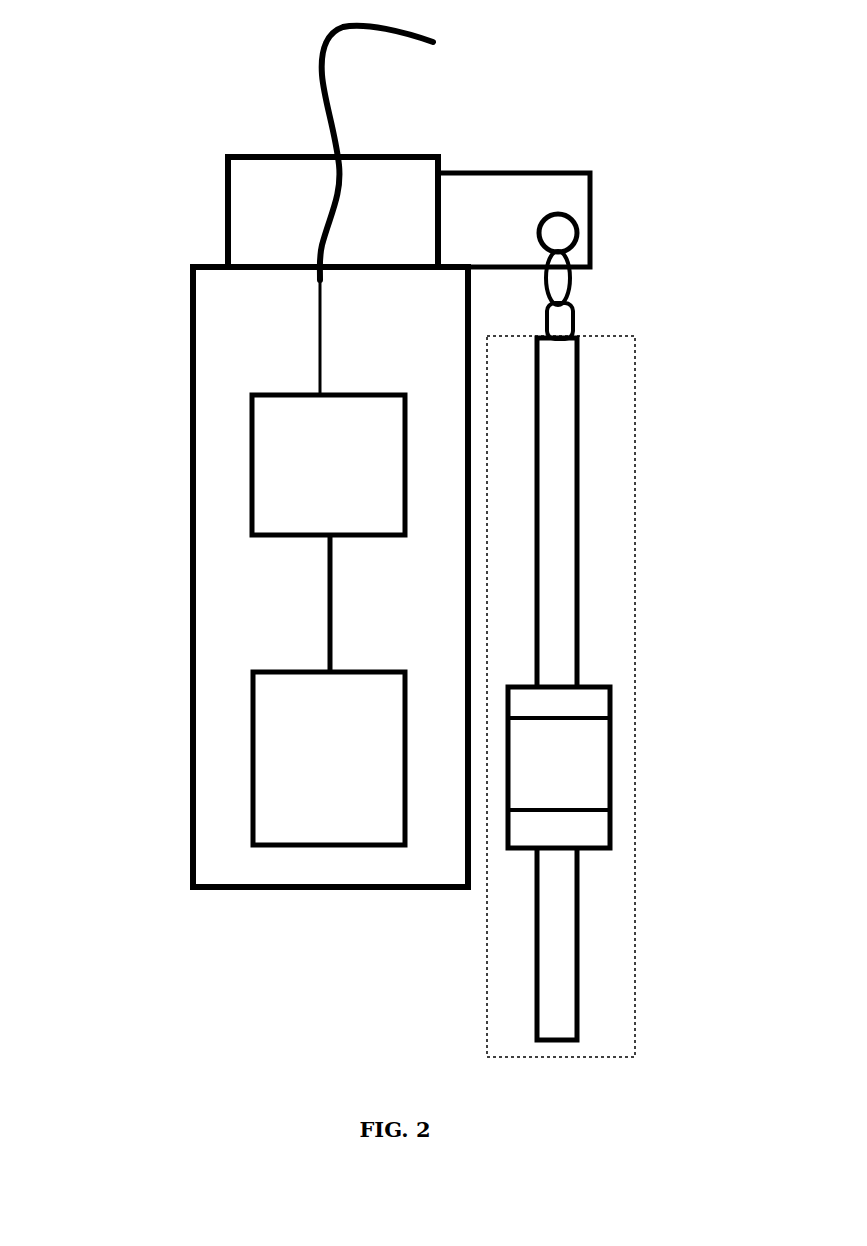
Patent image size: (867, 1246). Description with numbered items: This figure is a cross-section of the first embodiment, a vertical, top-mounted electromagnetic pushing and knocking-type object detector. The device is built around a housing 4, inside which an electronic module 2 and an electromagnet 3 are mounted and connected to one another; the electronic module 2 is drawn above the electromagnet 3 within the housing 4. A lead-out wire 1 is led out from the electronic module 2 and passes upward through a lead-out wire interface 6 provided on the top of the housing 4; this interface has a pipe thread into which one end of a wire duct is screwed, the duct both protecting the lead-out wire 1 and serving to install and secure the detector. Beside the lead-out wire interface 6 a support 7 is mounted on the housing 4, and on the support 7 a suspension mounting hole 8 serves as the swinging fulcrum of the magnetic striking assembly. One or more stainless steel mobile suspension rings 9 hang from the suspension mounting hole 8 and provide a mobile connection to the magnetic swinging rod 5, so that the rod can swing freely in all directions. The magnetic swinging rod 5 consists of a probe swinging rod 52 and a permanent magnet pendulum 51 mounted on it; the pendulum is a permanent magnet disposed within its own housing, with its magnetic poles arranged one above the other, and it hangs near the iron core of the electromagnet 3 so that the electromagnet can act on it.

The lead-out wire 1 is at (313, 210).
The electronic module 2 is at (233, 435).
The electromagnet 3 is at (231, 744).
The housing 4 is at (263, 577).
The magnetic swinging rod 5 is at (627, 696).
The lead-out wire interface 6 is at (247, 185).
The support 7 is at (528, 152).
The suspension mounting hole 8 is at (618, 174).
The mobile suspension rings 9 is at (623, 257).
The permanent magnet pendulum 51 is at (627, 734).
The probe swinging rod 52 is at (623, 689).